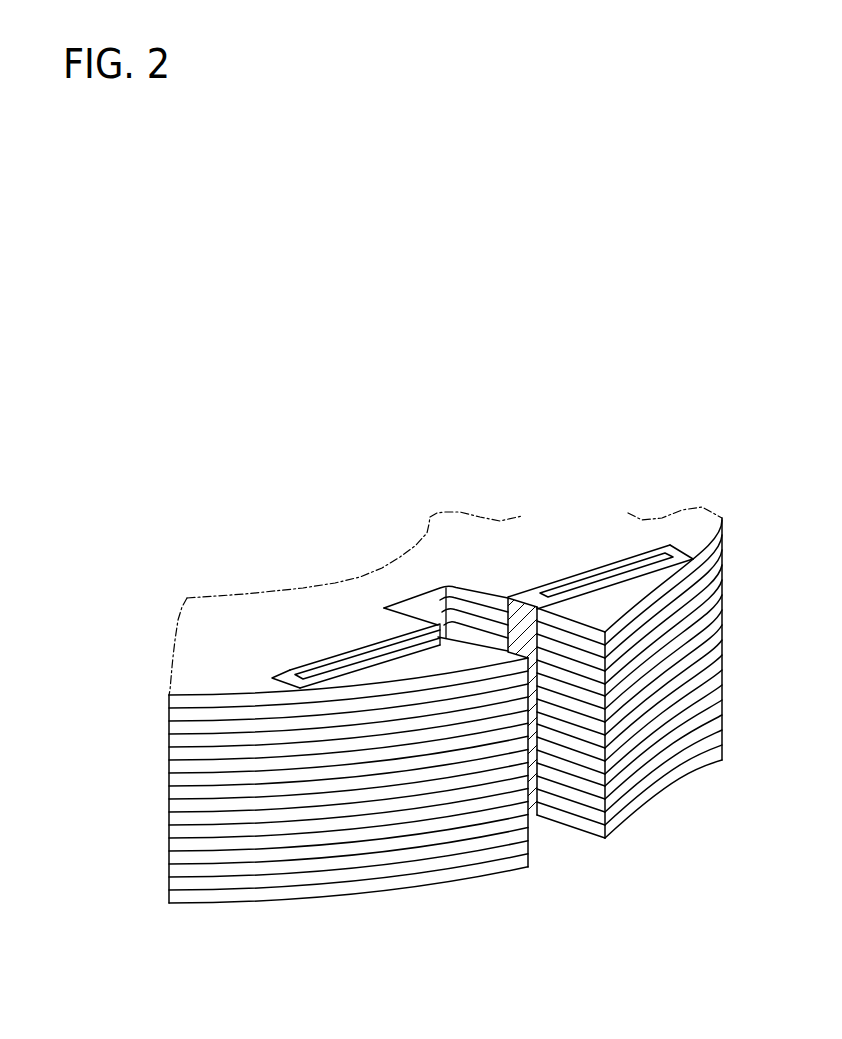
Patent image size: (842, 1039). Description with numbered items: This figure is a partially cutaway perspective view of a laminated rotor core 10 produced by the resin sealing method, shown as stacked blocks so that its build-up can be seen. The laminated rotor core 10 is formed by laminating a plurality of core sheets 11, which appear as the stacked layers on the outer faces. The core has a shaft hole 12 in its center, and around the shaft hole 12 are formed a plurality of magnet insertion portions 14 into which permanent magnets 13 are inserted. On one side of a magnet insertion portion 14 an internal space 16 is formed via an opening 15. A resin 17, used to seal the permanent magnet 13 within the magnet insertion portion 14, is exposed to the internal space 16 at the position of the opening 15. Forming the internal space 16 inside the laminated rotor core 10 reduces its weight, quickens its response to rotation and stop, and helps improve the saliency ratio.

The laminated rotor core 10 is at (497, 380).
The core sheet 11 is at (450, 708).
The shaft hole 12 is at (303, 588).
The permanent magnet 13 is at (380, 633).
The magnet insertion portion 14 is at (283, 673).
The opening 15 is at (441, 633).
The internal space 16 is at (455, 590).
The resin 17 is at (421, 620).